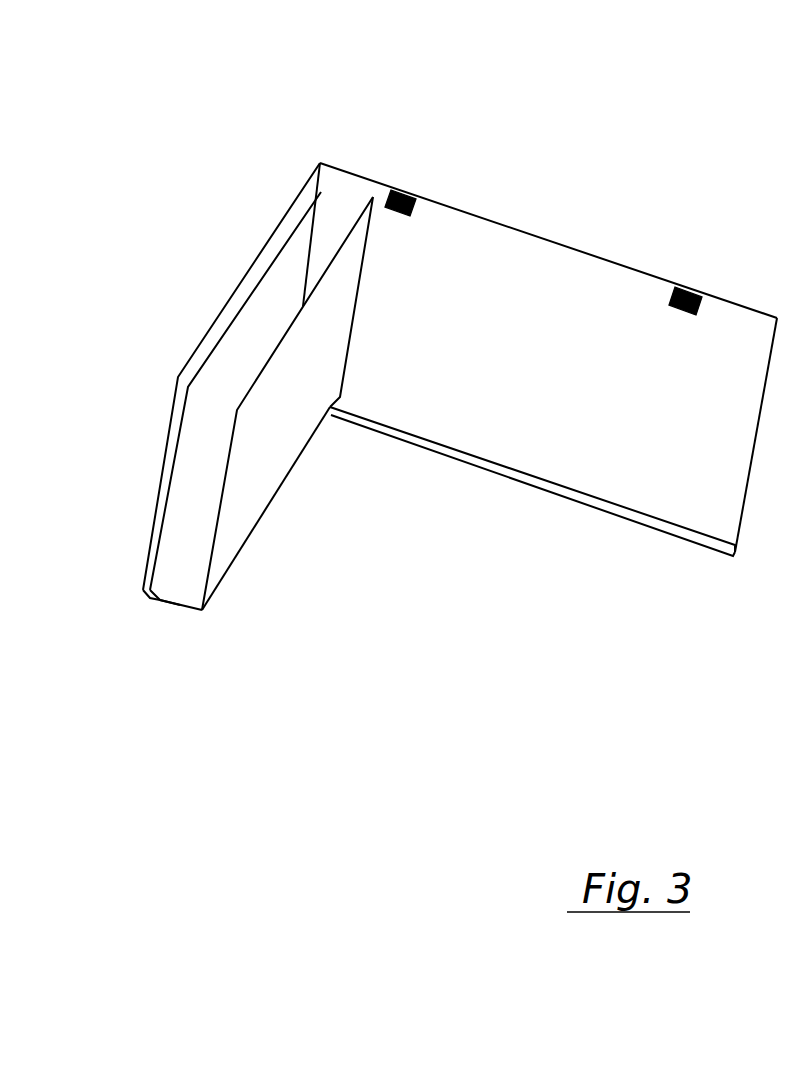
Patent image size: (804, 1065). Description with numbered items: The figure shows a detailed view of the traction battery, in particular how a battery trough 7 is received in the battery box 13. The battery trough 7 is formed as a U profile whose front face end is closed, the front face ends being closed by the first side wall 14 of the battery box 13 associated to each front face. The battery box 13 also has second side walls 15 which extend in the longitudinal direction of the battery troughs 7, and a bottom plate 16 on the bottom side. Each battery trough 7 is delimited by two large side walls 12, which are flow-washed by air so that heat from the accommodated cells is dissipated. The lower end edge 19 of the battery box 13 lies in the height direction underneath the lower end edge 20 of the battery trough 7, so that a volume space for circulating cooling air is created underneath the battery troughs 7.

The battery trough 7 is at (268, 476).
The side wall 12 is at (193, 457).
The battery box 13 is at (575, 220).
The first side wall 14 is at (478, 248).
The second side wall 15 is at (253, 262).
The bottom plate 16 is at (193, 573).
The lower end edge 19 is at (147, 593).
The lower end edge 20 is at (167, 600).